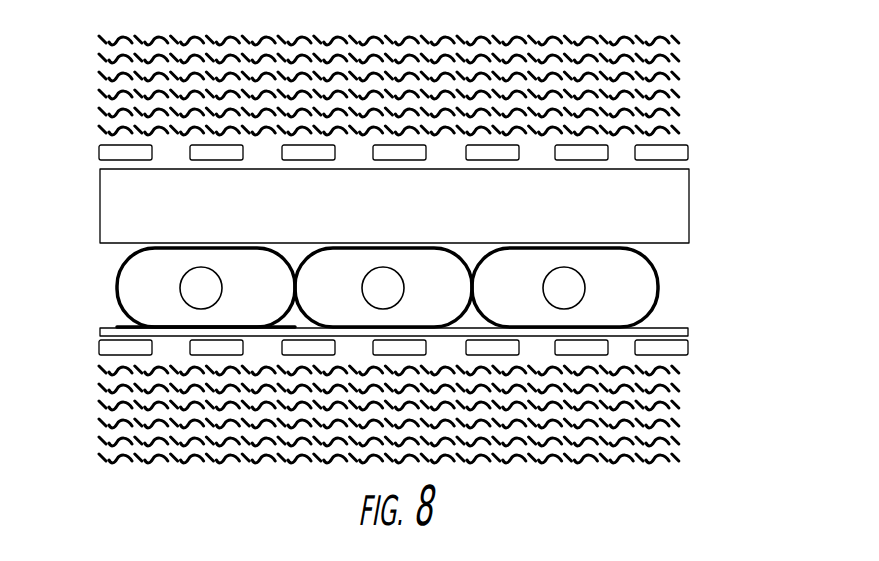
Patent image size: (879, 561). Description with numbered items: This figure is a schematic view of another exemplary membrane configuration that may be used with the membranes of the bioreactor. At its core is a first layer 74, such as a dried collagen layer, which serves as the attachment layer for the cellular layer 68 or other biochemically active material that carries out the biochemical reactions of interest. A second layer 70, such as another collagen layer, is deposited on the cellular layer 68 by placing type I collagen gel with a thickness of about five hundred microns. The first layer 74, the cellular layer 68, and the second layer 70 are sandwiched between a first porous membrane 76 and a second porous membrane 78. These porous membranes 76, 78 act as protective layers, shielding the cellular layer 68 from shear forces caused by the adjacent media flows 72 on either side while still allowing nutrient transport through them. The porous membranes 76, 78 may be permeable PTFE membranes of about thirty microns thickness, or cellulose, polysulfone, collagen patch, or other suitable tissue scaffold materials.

The cellular layer 68 is at (687, 281).
The second layer 70 is at (702, 190).
The media flows 72 is at (700, 92).
The first layer 74 is at (150, 313).
The first porous membrane 76 is at (703, 337).
The second porous membrane 78 is at (701, 137).